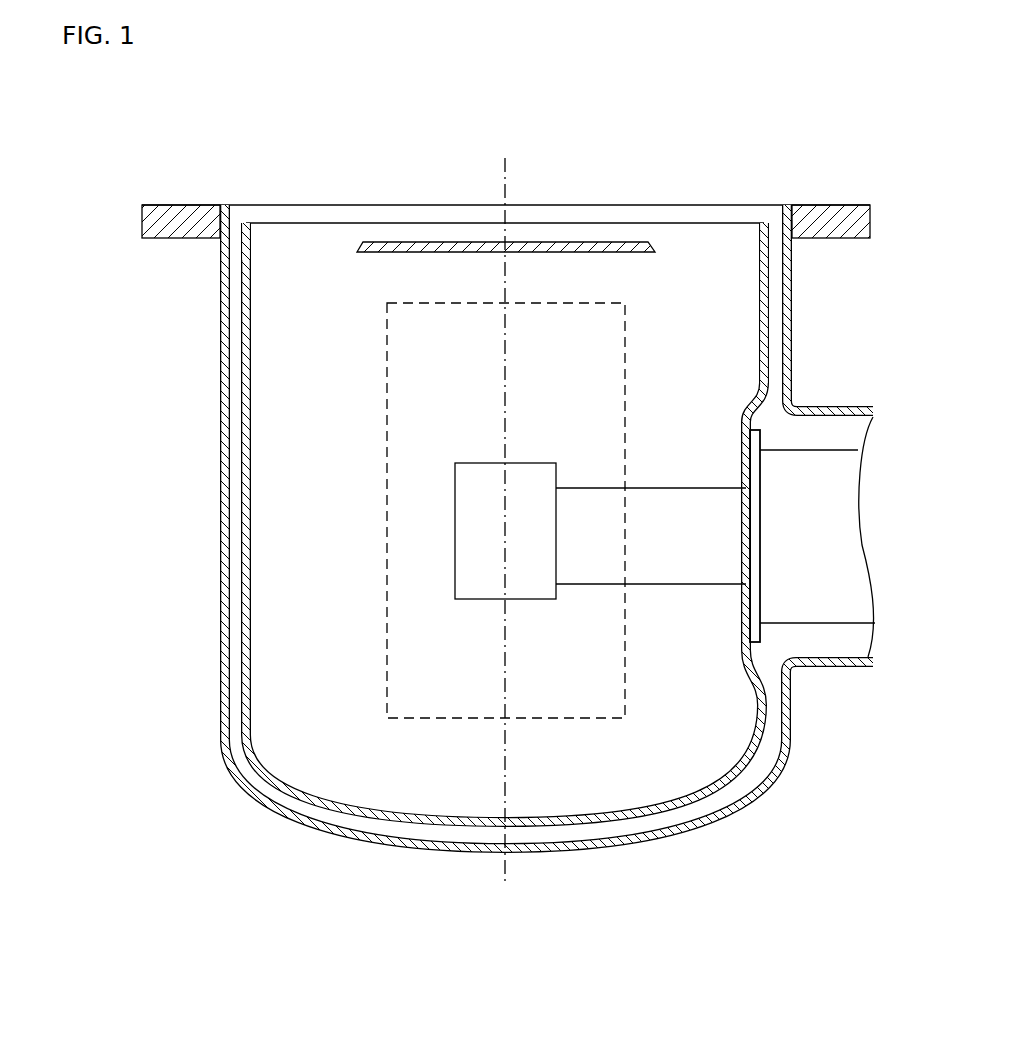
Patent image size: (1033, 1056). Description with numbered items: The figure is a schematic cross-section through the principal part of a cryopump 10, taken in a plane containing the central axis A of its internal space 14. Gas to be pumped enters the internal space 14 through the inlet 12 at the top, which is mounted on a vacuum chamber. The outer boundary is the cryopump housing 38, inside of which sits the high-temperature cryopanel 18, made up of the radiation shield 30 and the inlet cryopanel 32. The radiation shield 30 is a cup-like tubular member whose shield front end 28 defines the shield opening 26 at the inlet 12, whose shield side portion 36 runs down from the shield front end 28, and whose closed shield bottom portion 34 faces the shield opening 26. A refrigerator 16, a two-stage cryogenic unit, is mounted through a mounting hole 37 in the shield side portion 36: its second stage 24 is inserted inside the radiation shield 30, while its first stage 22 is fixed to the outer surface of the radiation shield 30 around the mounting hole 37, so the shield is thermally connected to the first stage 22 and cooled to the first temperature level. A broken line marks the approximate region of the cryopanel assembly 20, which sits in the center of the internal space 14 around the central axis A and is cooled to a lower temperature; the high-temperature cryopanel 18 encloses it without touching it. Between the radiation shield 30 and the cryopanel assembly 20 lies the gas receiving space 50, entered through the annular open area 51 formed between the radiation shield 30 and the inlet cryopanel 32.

The cryopump 10 is at (116, 158).
The inlet 12 is at (738, 200).
The internal space 14 is at (552, 552).
The refrigerator 16 is at (830, 537).
The high-temperature cryopanel 18 is at (158, 267).
The cryopanel assembly 20 is at (533, 510).
The first stage 22 is at (807, 664).
The second stage 24 is at (467, 600).
The shield opening 26 is at (658, 216).
The shield front end 28 is at (249, 222).
The radiation shield 30 is at (246, 332).
The inlet cryopanel 32 is at (363, 252).
The shield bottom portion 34 is at (647, 812).
The shield side portion 36 is at (768, 327).
The mounting hole 37 is at (743, 492).
The cryopump housing 38 is at (792, 740).
The gas receiving space 50 is at (300, 375).
The open area 51 is at (287, 245).
The central axis A is at (506, 168).